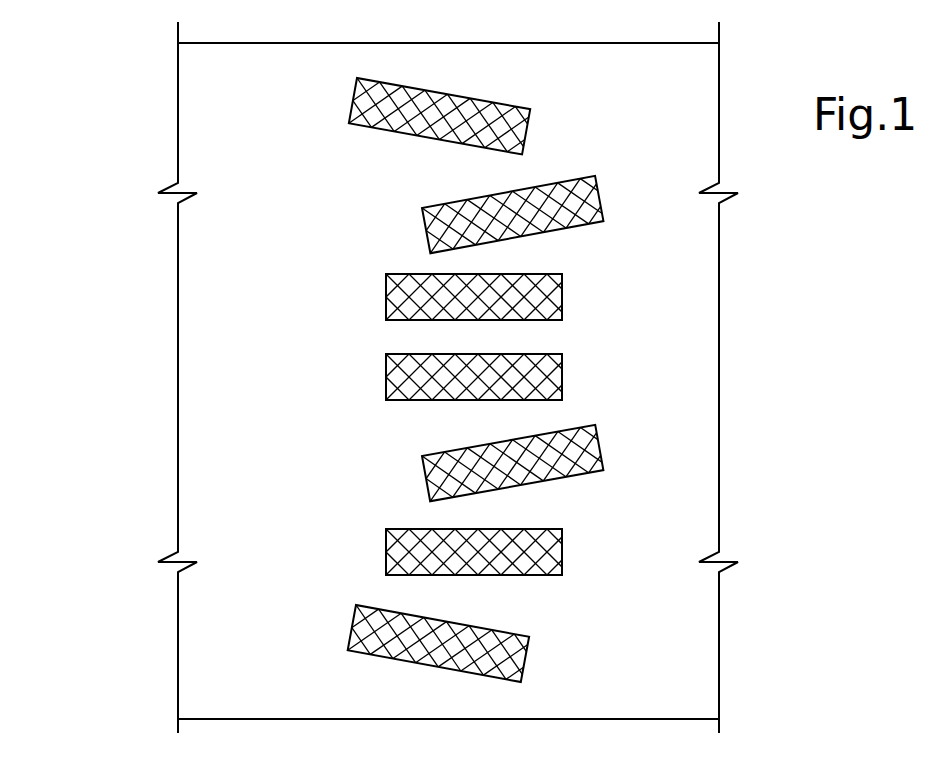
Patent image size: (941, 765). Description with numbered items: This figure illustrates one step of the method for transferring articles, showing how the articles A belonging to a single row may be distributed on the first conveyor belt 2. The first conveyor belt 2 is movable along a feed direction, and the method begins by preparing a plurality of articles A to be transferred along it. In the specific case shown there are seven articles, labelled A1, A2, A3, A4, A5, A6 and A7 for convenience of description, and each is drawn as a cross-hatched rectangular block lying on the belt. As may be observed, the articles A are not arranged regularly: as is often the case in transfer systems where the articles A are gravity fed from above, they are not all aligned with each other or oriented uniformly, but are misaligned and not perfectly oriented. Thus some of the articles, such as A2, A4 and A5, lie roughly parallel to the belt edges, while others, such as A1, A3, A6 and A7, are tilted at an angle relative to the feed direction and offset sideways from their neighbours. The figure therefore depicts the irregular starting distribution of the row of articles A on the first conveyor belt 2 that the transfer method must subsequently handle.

The article A is at (226, 135).
The first conveyor belt 2 is at (229, 360).
The first article A1 is at (515, 658).
The second article A2 is at (547, 552).
The third article A3 is at (590, 451).
The fourth article A4 is at (547, 368).
The fifth article A5 is at (547, 296).
The sixth article A6 is at (570, 197).
The seventh article A7 is at (492, 118).